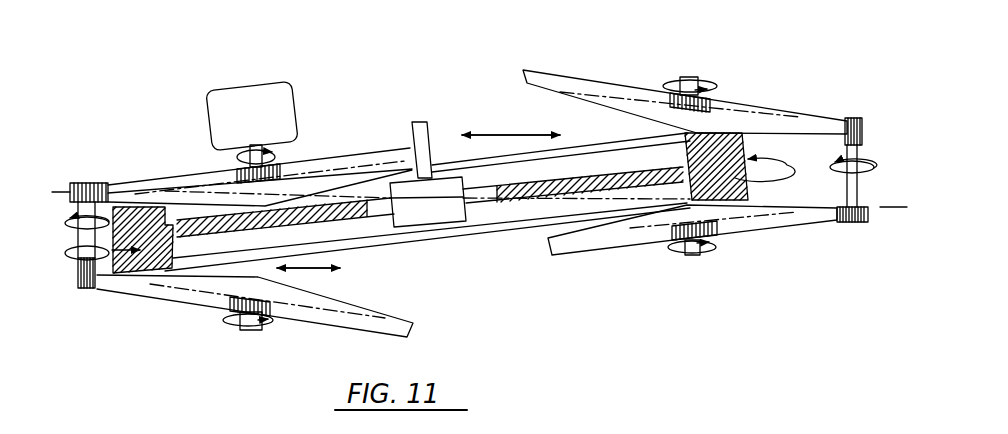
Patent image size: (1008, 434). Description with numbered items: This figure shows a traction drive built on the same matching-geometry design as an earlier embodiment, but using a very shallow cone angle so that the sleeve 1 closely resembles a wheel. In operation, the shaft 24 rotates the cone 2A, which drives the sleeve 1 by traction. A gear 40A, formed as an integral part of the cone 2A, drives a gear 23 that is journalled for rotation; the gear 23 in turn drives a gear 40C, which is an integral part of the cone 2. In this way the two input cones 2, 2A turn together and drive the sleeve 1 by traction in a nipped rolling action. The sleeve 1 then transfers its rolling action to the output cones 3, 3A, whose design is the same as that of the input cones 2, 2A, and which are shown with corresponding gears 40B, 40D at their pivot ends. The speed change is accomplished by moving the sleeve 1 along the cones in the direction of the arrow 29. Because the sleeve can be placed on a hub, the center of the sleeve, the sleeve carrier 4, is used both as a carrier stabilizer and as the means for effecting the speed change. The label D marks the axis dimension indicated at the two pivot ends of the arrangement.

The sleeve 1 is at (450, 235).
The cone 2 is at (192, 305).
The cone 2A is at (148, 178).
The output cone 3 is at (757, 100).
The output cone 3A is at (783, 232).
The sleeve carrier 4 is at (415, 120).
The gear 23 is at (87, 290).
The shaft 24 is at (253, 82).
The arrow 29 is at (510, 135).
The gear 40A is at (295, 158).
The adjusting nut 40B is at (613, 83).
The gear 40C is at (218, 307).
The adjusting nut 40D is at (655, 247).
The distance D is at (62, 189).